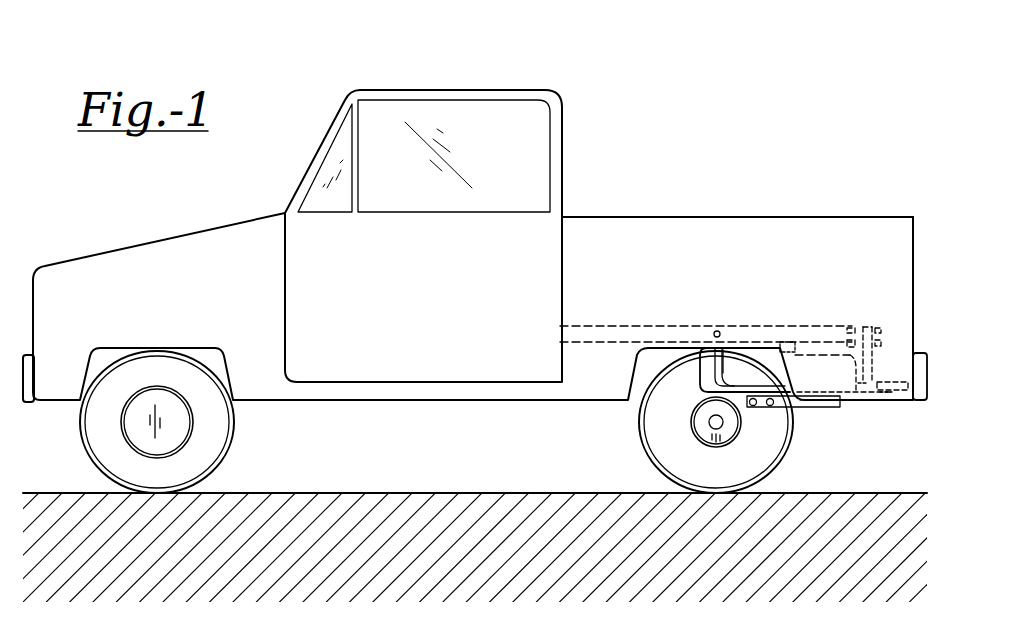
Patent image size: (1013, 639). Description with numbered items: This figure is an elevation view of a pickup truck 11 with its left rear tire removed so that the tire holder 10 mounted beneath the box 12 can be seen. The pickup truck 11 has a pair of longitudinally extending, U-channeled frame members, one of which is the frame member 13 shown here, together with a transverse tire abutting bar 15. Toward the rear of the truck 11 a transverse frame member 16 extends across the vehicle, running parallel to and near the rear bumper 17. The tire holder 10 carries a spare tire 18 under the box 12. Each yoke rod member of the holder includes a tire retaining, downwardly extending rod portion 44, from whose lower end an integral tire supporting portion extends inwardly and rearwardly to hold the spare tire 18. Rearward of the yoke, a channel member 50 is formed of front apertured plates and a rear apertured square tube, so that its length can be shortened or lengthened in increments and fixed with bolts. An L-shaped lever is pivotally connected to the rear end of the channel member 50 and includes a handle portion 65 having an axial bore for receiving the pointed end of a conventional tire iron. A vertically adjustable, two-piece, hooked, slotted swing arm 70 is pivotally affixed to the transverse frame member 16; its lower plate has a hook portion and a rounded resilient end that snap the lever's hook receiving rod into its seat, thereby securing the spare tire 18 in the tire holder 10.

The tire holder 10 is at (763, 411).
The pickup truck 11 is at (564, 121).
The box 12 is at (618, 215).
The frame member 13 is at (605, 325).
The tire abutting bar 15 is at (783, 342).
The transverse frame member 16 is at (853, 322).
The rear bumper 17 is at (924, 353).
The spare tire 18 is at (697, 363).
The rod portion 44 is at (723, 373).
The channel member 50 is at (812, 410).
The handle portion 65 is at (890, 405).
The swing arm 70 is at (862, 405).